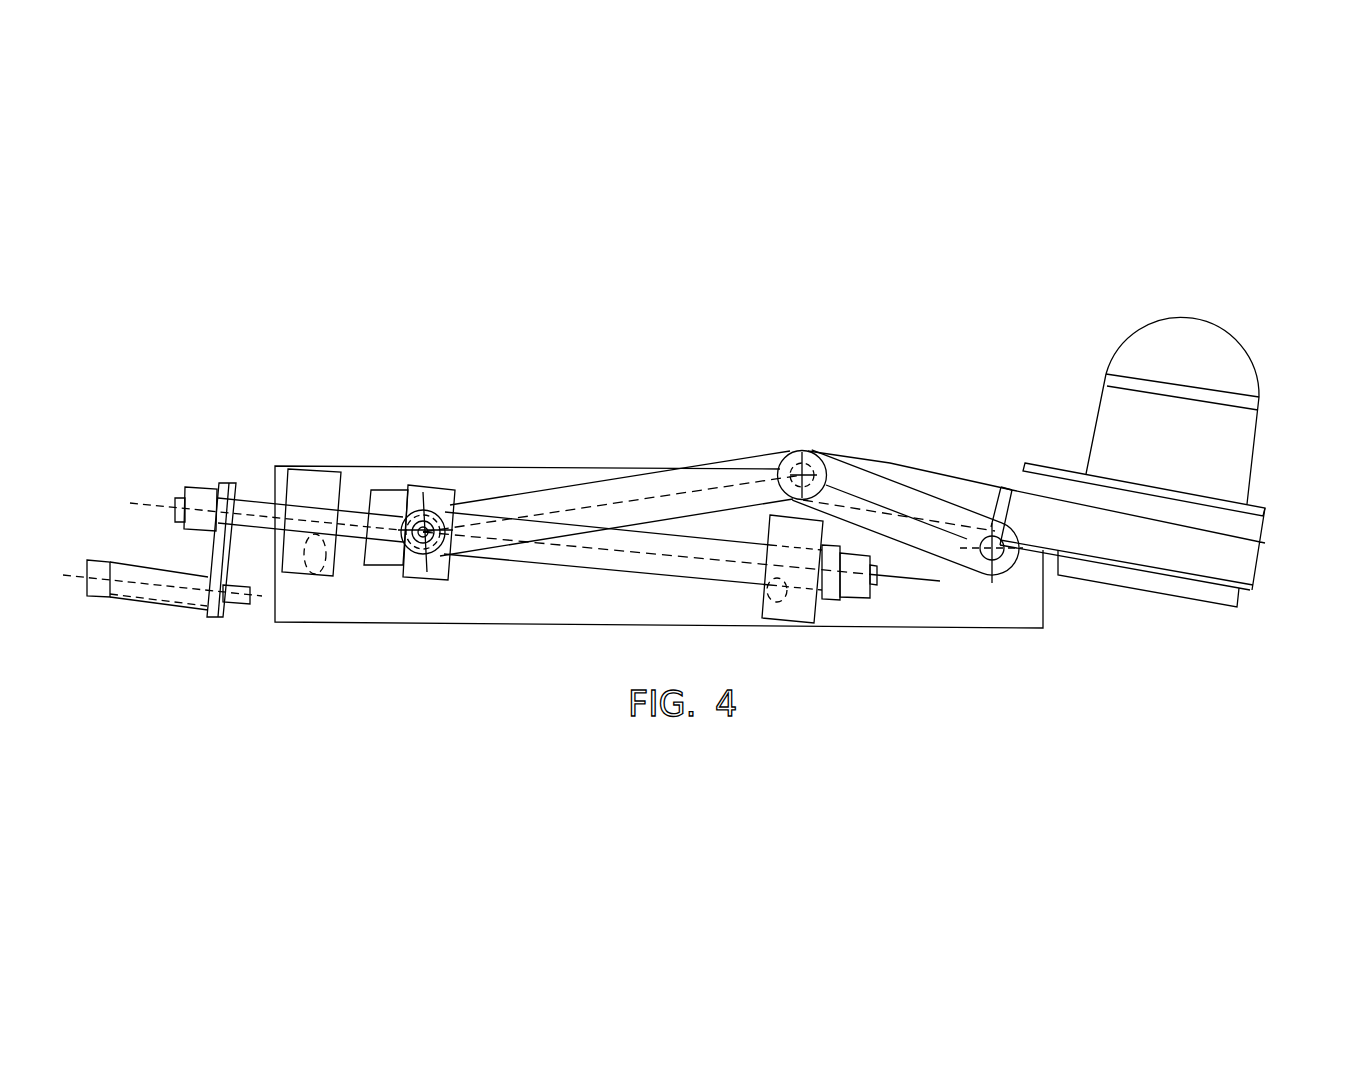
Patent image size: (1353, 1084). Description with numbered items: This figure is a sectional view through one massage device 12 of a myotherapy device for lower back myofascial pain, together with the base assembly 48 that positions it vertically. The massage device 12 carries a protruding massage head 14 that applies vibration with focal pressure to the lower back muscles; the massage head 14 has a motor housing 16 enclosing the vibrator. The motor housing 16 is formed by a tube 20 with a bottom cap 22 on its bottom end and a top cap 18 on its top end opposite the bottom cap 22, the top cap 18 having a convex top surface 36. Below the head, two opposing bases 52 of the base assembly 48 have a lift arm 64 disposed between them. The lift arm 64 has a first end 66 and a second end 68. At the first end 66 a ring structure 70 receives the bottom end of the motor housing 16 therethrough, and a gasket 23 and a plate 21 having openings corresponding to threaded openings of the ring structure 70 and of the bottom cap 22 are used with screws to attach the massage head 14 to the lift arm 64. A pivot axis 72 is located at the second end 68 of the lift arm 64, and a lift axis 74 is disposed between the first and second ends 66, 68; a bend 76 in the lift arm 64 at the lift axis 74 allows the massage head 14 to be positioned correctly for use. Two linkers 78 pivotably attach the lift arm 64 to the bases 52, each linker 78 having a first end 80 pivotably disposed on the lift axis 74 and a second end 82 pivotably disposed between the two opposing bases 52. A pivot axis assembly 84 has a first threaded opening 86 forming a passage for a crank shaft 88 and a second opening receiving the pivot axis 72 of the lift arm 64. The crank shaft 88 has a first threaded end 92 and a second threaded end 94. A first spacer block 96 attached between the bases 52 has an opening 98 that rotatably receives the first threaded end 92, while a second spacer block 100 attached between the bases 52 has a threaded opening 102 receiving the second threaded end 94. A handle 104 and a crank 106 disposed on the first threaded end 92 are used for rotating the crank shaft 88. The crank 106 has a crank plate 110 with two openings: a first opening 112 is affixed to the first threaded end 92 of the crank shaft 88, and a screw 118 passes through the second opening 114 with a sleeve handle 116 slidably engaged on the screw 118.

The massage device 12 is at (399, 418).
The massage head 14 is at (1058, 365).
The motor housing 16 is at (1060, 432).
The top cap 18 is at (1150, 348).
The tube 20 is at (1220, 452).
The plate 21 is at (1257, 507).
The bottom cap 22 is at (1143, 582).
The gasket 23 is at (1250, 520).
The convex top surface 36 is at (1202, 328).
The base assembly 48 is at (502, 418).
The bases 52 is at (545, 606).
The lift arm 64 is at (623, 488).
The first end of lift arm 66 is at (973, 493).
The second end of lift arm 68 is at (515, 502).
The ring structure 70 is at (1230, 547).
The pivot axis 72 is at (420, 577).
The lift axis 74 is at (803, 482).
The bend 76 is at (803, 447).
The linker 78 is at (893, 493).
The first end of linker 80 is at (793, 478).
The second end of linker 82 is at (1017, 572).
The pivot axis assembly 84 is at (474, 574).
The first threaded opening 86 is at (437, 495).
The crank shaft 88 is at (347, 506).
The first threaded end 92 is at (253, 500).
The second threaded end 94 is at (753, 588).
The first spacer block 96 is at (312, 480).
The opening 98 is at (310, 575).
The second spacer block 100 is at (803, 613).
The threaded opening 102 is at (773, 594).
The handle 104 is at (136, 469).
The crank 106 is at (111, 514).
The crank plate 110 is at (231, 575).
The first opening 112 is at (193, 488).
The second opening 114 is at (200, 598).
The sleeve handle 116 is at (140, 568).
The screw 118 is at (90, 600).